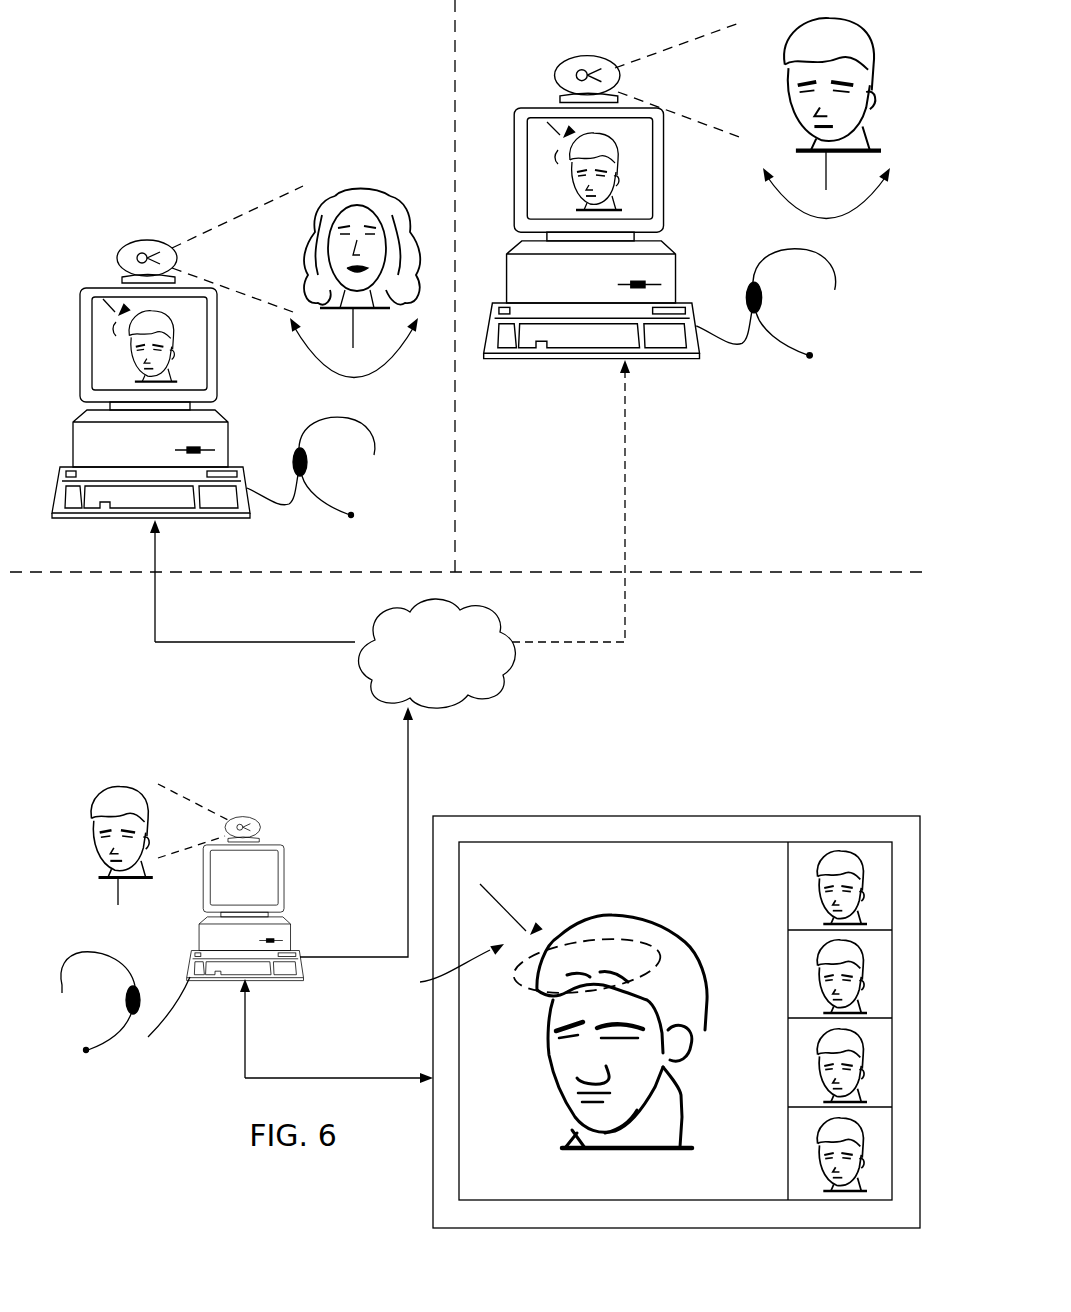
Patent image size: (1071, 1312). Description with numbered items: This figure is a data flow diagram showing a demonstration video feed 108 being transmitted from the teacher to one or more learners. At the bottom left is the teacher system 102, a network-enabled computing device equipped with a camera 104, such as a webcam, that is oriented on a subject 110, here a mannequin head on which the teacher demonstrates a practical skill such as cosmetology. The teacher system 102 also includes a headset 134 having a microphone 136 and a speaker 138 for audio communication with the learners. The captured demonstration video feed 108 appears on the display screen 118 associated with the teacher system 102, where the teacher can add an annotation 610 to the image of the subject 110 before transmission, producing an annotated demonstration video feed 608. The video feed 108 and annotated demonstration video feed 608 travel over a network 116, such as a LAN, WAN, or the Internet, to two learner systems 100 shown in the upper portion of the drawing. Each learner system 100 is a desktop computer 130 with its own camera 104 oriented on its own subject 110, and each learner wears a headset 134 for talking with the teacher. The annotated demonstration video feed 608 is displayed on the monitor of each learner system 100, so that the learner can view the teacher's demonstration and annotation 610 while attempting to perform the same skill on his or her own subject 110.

The learner system 100 is at (174, 184).
The teacher system 102 is at (295, 803).
The camera 104 is at (133, 242).
The video feed 108 is at (155, 607).
The subject 110 is at (398, 202).
The network 116 is at (419, 677).
The display screen 118 is at (645, 816).
The computer 130 is at (675, 253).
The headset 134 is at (372, 440).
The microphone 136 is at (84, 1052).
The speaker 138 is at (127, 1006).
The annotated demonstration video feed 608 is at (178, 336).
The annotation 610 is at (447, 966).